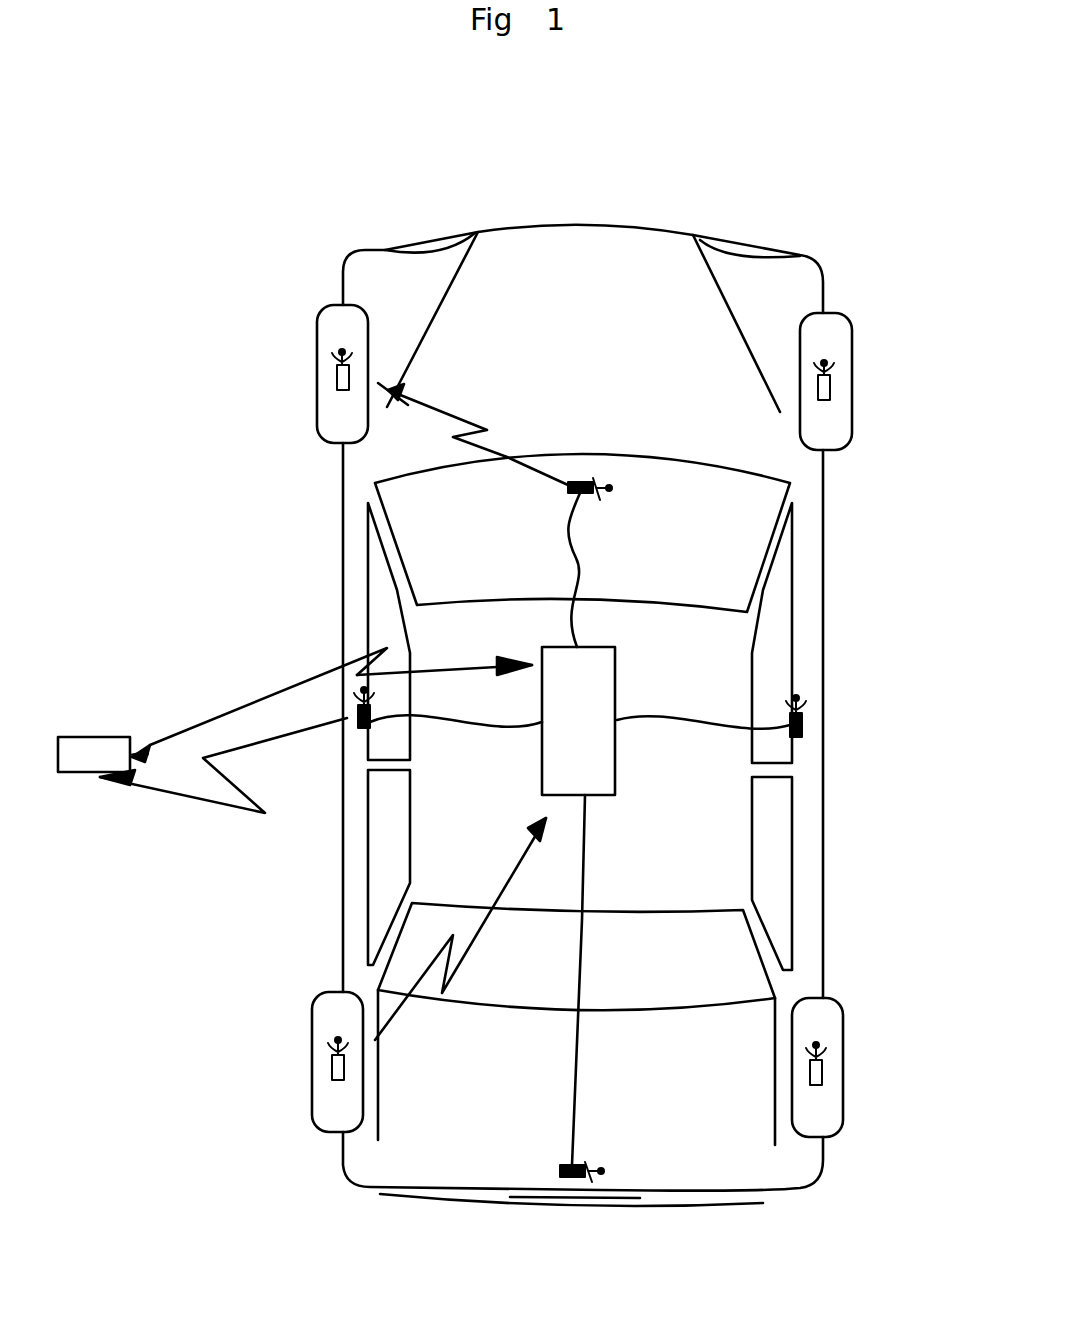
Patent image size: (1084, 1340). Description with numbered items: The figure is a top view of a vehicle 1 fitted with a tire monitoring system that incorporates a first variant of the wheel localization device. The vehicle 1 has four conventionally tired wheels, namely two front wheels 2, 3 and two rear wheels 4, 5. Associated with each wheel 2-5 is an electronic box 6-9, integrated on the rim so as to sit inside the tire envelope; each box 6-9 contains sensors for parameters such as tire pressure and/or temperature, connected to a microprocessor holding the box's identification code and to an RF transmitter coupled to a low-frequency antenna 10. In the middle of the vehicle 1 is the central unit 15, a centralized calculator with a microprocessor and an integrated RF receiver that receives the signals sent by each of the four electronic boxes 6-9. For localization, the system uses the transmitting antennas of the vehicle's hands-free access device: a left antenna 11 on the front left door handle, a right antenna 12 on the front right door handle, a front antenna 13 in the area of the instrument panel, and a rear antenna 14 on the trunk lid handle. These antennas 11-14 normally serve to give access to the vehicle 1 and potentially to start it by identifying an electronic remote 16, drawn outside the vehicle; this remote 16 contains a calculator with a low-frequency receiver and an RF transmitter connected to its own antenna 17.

The vehicle 1 is at (767, 652).
The front wheel 2 is at (350, 430).
The front wheel 3 is at (830, 425).
The rear wheel 4 is at (324, 1097).
The rear wheel 5 is at (843, 1117).
The electronic box 6 is at (335, 382).
The electronic box 7 is at (830, 387).
The electronic box 8 is at (330, 1065).
The electronic box 9 is at (822, 1075).
The low-frequency antenna 10 is at (341, 350).
The left antenna 11 is at (358, 728).
The right antenna 12 is at (805, 718).
The front antenna 13 is at (593, 480).
The rear antenna 14 is at (567, 1177).
The central unit 15 is at (600, 785).
The electronic remote 16 is at (73, 737).
The antenna 17 is at (145, 752).